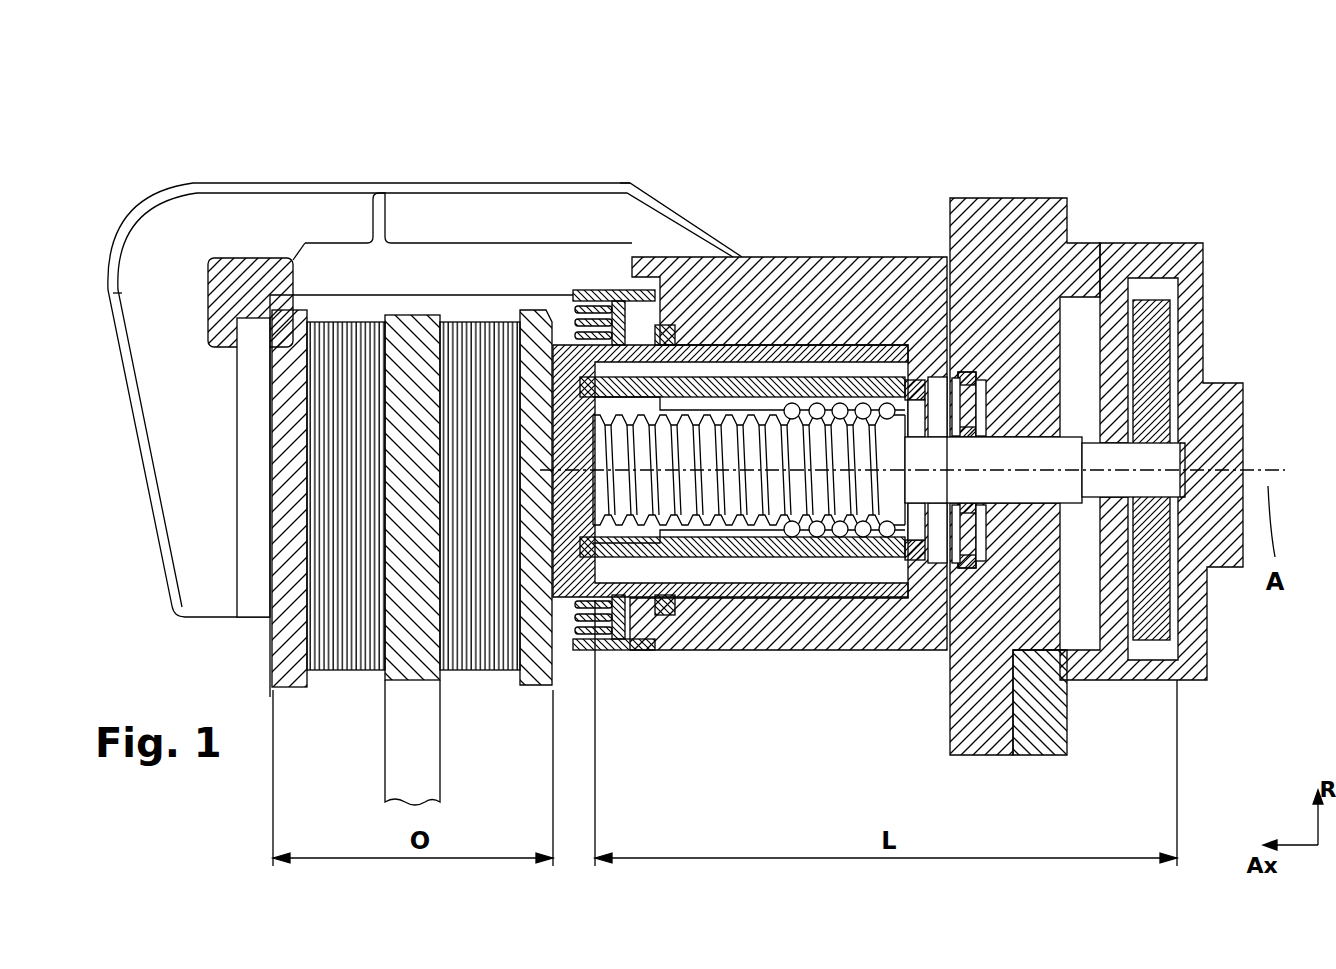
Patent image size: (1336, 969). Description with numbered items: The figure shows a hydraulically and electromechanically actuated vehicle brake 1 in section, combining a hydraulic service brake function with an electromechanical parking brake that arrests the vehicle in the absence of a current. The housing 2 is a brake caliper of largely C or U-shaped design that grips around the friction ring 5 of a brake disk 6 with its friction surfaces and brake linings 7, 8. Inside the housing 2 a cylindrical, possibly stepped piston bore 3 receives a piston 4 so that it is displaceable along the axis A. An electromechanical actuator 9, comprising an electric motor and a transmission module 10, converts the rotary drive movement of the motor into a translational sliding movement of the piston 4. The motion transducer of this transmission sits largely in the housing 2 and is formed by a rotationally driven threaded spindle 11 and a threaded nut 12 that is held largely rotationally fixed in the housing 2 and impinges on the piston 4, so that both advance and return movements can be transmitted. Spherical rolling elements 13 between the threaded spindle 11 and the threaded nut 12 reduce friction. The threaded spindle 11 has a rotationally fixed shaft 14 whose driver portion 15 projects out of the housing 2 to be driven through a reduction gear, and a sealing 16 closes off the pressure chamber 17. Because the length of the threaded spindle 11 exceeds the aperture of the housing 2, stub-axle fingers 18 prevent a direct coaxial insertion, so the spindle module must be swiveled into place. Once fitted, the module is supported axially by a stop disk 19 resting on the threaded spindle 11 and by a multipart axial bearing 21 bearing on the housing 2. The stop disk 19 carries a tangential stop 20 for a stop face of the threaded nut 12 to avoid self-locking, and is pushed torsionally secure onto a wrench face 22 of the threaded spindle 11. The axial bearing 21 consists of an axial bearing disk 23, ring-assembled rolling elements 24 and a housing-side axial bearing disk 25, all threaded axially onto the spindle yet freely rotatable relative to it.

The vehicle brake 1 is at (352, 172).
The housing 2 is at (866, 300).
The piston bore 3 is at (897, 380).
The piston 4 is at (774, 352).
The friction ring 5 is at (390, 449).
The brake disk 6 is at (400, 780).
The brake lining 7 is at (341, 672).
The brake lining 8 is at (483, 672).
The electromechanical actuator 9 is at (1178, 217).
The transmission module 10 is at (1210, 270).
The threaded spindle 11 is at (745, 517).
The threaded nut 12 is at (797, 402).
The rolling elements 13 is at (840, 402).
The shaft 14 is at (1028, 437).
The driver portion 15 is at (1165, 457).
The sealing 16 is at (672, 325).
The pressure chamber 17 is at (887, 562).
The stub-axle fingers 18 is at (185, 517).
The stop disk 19 is at (936, 548).
The tangential stop 20 is at (845, 545).
The axial bearing 21 is at (940, 385).
The wrench face 22 is at (925, 545).
The axial bearing disk 23 is at (950, 545).
The rolling elements 24 is at (966, 358).
The axial bearing disk 25 is at (968, 560).